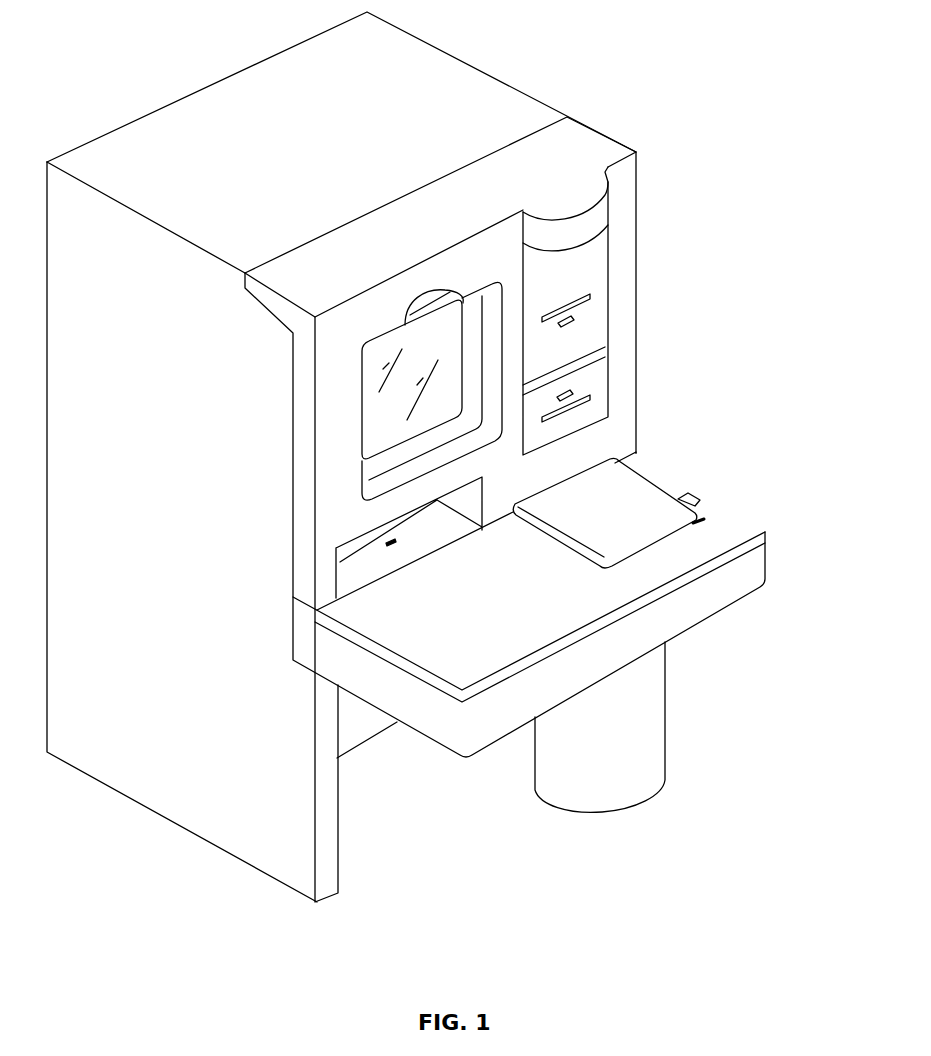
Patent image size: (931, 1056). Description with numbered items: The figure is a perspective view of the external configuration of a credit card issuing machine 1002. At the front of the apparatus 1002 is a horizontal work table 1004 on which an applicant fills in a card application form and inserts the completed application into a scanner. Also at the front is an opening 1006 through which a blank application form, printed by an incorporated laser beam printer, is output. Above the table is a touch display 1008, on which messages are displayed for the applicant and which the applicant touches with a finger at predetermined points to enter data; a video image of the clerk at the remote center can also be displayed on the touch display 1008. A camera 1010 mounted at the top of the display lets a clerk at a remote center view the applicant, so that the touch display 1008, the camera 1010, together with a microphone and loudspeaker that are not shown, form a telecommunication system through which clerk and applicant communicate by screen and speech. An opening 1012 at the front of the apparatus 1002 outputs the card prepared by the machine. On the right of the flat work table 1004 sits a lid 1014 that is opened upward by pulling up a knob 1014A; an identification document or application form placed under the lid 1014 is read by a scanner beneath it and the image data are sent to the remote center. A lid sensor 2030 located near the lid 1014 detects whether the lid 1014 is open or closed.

The card issuing machine 1002 is at (490, 74).
The work table 1004 is at (697, 485).
The opening 1006 is at (343, 553).
The touch display 1008 is at (370, 405).
The camera 1010 is at (433, 290).
The opening 1012 is at (587, 397).
The lid 1014 is at (642, 475).
The knob 1014A is at (700, 503).
The lid sensor 2030 is at (701, 521).